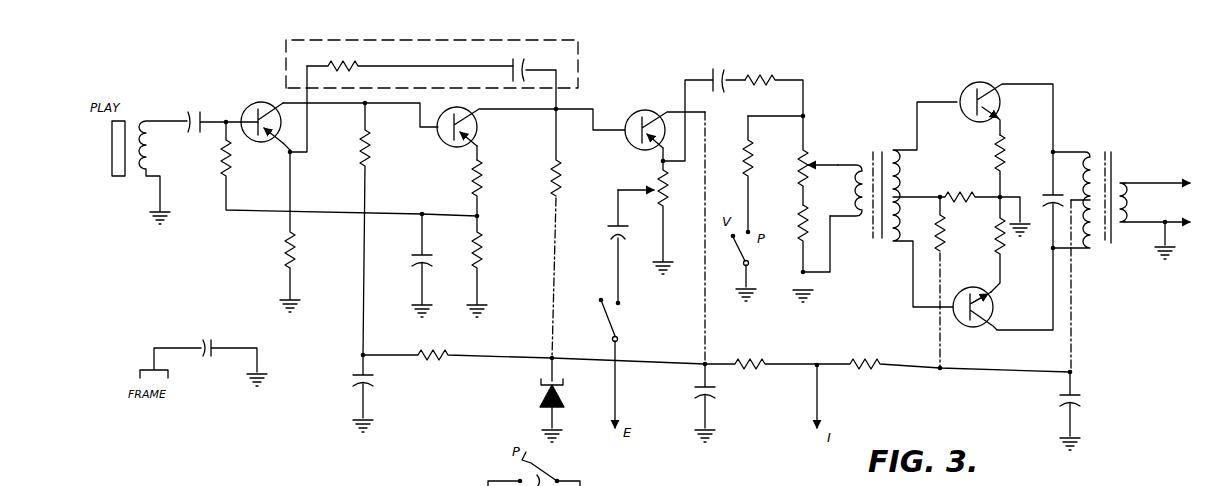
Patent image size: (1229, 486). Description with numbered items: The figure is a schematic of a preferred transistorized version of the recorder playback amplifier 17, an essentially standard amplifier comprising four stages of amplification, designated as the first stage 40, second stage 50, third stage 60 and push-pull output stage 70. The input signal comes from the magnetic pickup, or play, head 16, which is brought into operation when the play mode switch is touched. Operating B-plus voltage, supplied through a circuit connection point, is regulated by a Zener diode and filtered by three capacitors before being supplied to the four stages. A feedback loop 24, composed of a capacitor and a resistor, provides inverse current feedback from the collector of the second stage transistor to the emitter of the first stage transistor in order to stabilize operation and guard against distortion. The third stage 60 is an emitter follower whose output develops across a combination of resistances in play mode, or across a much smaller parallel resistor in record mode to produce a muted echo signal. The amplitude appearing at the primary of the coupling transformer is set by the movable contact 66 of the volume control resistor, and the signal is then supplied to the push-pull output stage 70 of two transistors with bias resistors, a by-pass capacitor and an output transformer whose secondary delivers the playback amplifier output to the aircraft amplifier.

The magnetic pickup head 16 is at (118, 144).
The feedback loop 24 is at (432, 61).
The first stage 40 is at (252, 112).
The second stage 50 is at (483, 135).
The third stage 60 is at (651, 115).
The movable contact 66 is at (856, 157).
The push-pull output stage 70 is at (999, 100).
The playback amplifier 17 is at (1124, 219).